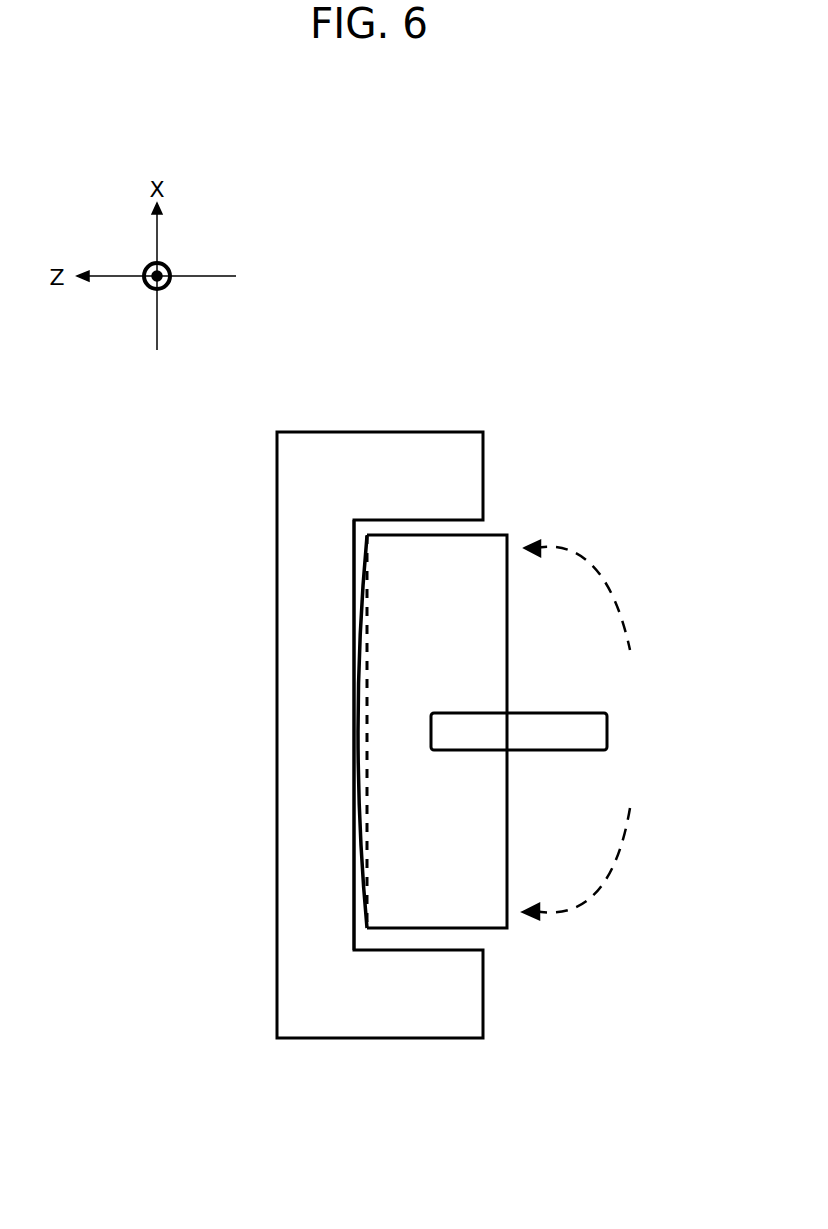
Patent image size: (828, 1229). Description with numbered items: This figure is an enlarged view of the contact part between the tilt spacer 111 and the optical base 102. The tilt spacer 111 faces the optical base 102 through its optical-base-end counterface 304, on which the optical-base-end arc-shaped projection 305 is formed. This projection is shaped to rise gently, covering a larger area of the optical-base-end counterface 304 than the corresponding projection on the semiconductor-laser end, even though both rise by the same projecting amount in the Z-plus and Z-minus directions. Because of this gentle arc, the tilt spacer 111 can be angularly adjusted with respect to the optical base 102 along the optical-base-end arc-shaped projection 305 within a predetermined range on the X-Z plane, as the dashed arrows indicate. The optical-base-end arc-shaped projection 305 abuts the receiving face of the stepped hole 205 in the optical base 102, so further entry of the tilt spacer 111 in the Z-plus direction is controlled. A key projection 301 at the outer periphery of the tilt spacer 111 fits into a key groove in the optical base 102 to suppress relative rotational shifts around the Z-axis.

The optical base 102 is at (279, 910).
The stepped hole 205 is at (352, 531).
The optical-base-end counterface 304 is at (368, 535).
The optical-base-end arc-shaped projection 305 is at (360, 725).
The tilt spacer 111 is at (478, 915).
The key projection 301 is at (601, 735).